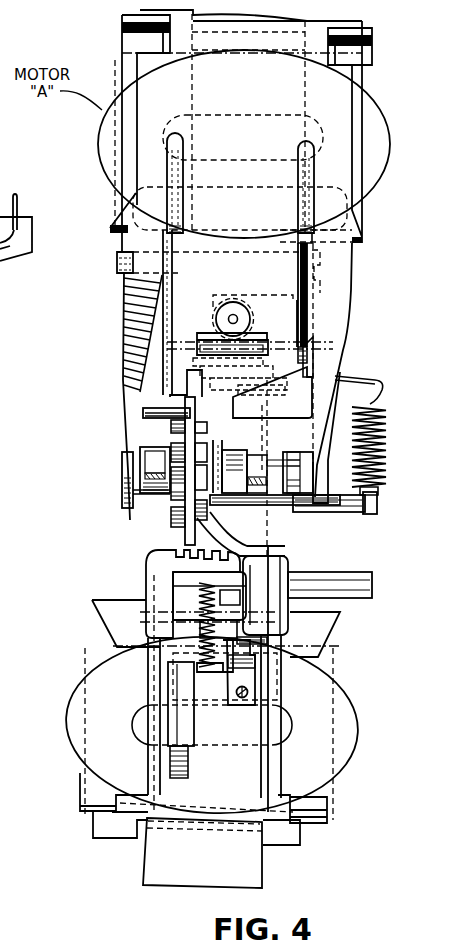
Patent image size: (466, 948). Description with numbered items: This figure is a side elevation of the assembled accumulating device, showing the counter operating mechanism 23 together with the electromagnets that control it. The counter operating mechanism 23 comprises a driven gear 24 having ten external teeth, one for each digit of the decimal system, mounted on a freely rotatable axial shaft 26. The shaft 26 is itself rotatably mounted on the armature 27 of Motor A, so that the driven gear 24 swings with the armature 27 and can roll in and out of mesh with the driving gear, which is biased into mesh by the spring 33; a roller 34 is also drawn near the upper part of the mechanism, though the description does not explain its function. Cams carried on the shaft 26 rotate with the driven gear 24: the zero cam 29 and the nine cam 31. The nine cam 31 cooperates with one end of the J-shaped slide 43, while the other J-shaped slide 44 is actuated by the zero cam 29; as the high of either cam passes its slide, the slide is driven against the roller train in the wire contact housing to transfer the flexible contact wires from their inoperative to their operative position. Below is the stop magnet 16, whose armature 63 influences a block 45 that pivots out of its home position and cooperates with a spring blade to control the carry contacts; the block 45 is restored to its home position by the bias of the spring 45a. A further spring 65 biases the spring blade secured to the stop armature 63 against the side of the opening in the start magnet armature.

The Stop 16 is at (72, 733).
The counter operating mechanism 23 is at (180, 505).
The driven gear 24 is at (178, 443).
The axial shaft 26 is at (142, 470).
The armature of Motor A 27 is at (338, 283).
The zero cam 29 is at (135, 490).
The nine cam 31 is at (278, 462).
The spring 33 is at (122, 375).
The roller 34 is at (215, 318).
The J-shaped slide 43 is at (253, 492).
The J-shaped slide 44 is at (152, 496).
The block 45 is at (213, 513).
The spring 45a is at (195, 626).
The armature of the stop magnet 63 is at (287, 760).
The spring 65 is at (257, 694).